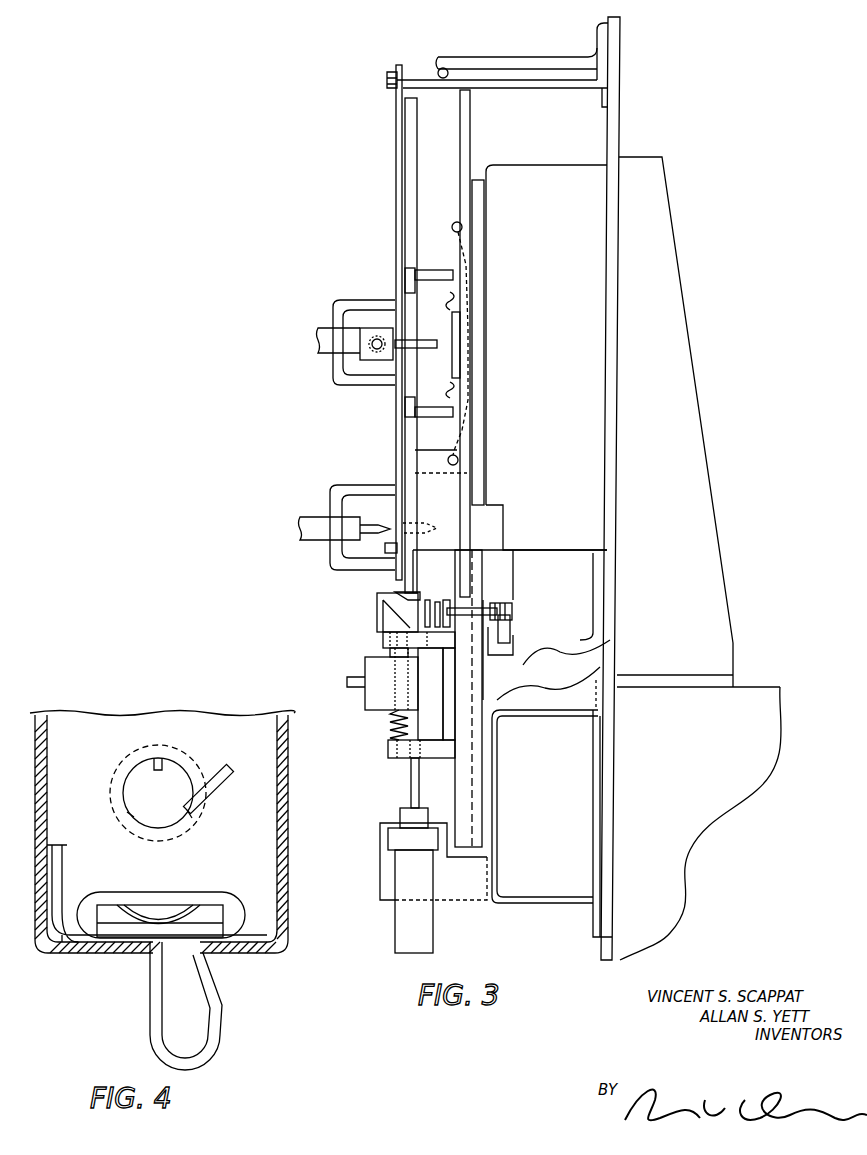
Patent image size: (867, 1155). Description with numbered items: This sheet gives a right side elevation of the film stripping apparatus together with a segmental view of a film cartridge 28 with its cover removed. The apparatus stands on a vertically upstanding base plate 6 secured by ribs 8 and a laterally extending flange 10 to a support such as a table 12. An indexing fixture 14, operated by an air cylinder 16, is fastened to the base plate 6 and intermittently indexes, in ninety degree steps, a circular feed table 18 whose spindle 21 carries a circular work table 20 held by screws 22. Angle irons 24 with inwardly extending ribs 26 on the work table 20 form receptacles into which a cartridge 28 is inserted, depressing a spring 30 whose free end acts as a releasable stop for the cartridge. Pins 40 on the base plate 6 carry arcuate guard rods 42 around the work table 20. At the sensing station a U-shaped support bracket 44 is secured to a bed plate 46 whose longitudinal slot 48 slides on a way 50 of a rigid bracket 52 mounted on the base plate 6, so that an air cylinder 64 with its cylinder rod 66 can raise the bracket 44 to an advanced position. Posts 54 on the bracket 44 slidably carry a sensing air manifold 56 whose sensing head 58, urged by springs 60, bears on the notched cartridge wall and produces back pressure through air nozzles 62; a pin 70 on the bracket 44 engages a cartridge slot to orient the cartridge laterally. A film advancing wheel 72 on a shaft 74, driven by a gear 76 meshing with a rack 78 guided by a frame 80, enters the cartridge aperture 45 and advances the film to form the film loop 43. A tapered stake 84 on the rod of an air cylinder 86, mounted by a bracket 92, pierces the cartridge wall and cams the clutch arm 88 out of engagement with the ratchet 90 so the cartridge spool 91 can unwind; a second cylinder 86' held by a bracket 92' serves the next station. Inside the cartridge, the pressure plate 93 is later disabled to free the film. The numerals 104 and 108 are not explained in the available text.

In FIG. 3, the base plate 6 is at (613, 337).
In FIG. 3, the ribs 8 is at (684, 297).
In FIG. 3, the laterally extending flange 10 is at (683, 677).
In FIG. 3, the table 12 is at (684, 830).
In FIG. 3, the indexing fixture 14 is at (554, 295).
In FIG. 3, the air cylinder 16 is at (590, 590).
In FIG. 3, the circular feed table 18 is at (478, 262).
In FIG. 3, the circular work table 20 is at (471, 115).
In FIG. 3, the spindle 21 is at (452, 358).
In FIG. 3, the screws 22 is at (450, 300).
In FIG. 3, the angle irons 24 is at (430, 270).
In FIG. 3, the ribs 26 is at (406, 280).
In FIG. 3, the film cartridge 28 is at (447, 493).
In FIG. 4, the film cartridge 28 is at (37, 950).
In FIG. 3, the spring 30 is at (452, 455).
In FIG. 3, the pins 40 is at (507, 57).
In FIG. 3, the arcuate guard rods 42 is at (441, 67).
In FIG. 4, the film loop 43 is at (218, 1008).
In FIG. 3, the U-shaped support bracket 44 is at (385, 640).
In FIG. 4, the cartridge aperture 45 is at (108, 946).
In FIG. 3, the bed plate 46 is at (460, 780).
In FIG. 3, the longitudinal slot 48 is at (487, 790).
In FIG. 3, the way 50 is at (485, 762).
In FIG. 3, the rigid bracket 52 is at (494, 820).
In FIG. 3, the posts 54 is at (392, 652).
In FIG. 3, the sensing air manifold 56 is at (370, 700).
In FIG. 3, the sensing head 58 is at (395, 618).
In FIG. 3, the springs 60 is at (390, 728).
In FIG. 3, the air nozzles 62 is at (347, 680).
In FIG. 3, the air cylinder 64 is at (433, 922).
In FIG. 3, the cylinder rod 66 is at (411, 780).
In FIG. 3, the pin 70 is at (408, 596).
In FIG. 3, the film advancing wheel 72 is at (433, 605).
In FIG. 3, the shaft 74 is at (470, 613).
In FIG. 3, the gear 76 is at (509, 608).
In FIG. 3, the rack 78 is at (507, 633).
In FIG. 3, the frame 80 is at (500, 656).
In FIG. 3, the tapered punch or stake 84 is at (370, 525).
In FIG. 3, the air cylinder 86 is at (315, 512).
In FIG. 3, the air cylinder 86' is at (309, 336).
In FIG. 4, the clutch arm 88 is at (222, 768).
In FIG. 4, the ratchet 90 is at (160, 752).
In FIG. 4, the cartridge spool 91 is at (205, 813).
In FIG. 3, the bracket 92 is at (336, 528).
In FIG. 3, the bracket 92' is at (338, 343).
In FIG. 4, the pressure plate 93 is at (205, 932).
In FIG. 3, the pivot 104 is at (373, 340).
In FIG. 3, the plate 108 is at (437, 344).